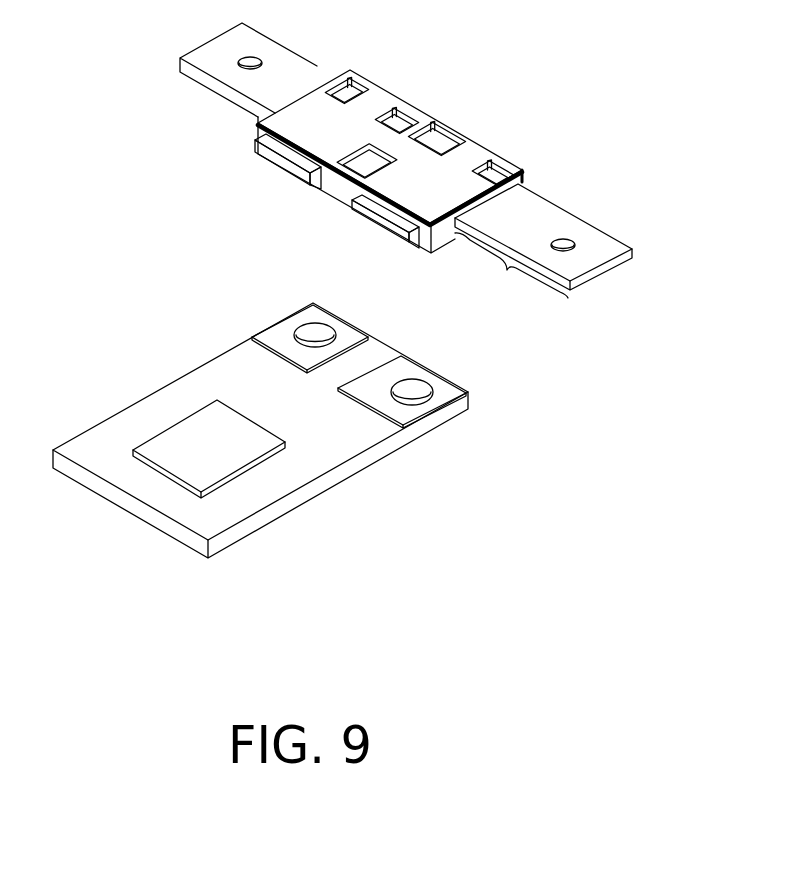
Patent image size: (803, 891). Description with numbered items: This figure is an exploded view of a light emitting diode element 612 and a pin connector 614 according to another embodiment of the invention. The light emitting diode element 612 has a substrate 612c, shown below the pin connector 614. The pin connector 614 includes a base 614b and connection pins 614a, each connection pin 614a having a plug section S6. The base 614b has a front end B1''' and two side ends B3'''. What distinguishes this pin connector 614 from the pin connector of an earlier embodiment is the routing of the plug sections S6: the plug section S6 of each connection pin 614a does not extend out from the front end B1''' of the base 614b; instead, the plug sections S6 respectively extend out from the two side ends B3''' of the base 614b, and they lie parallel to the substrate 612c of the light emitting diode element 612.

The pin connector 614 is at (240, 134).
The connection pin 614a is at (491, 206).
The base 614b is at (305, 128).
The side end B3''' is at (403, 168).
The front end B1''' is at (369, 193).
The plug section S6 is at (511, 273).
The light emitting diode element 612 is at (331, 512).
The substrate 612c is at (148, 410).